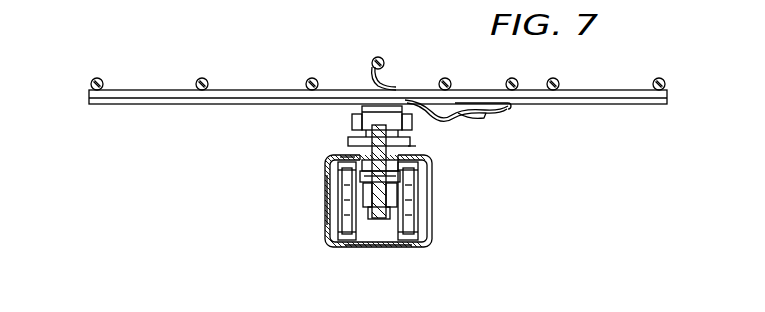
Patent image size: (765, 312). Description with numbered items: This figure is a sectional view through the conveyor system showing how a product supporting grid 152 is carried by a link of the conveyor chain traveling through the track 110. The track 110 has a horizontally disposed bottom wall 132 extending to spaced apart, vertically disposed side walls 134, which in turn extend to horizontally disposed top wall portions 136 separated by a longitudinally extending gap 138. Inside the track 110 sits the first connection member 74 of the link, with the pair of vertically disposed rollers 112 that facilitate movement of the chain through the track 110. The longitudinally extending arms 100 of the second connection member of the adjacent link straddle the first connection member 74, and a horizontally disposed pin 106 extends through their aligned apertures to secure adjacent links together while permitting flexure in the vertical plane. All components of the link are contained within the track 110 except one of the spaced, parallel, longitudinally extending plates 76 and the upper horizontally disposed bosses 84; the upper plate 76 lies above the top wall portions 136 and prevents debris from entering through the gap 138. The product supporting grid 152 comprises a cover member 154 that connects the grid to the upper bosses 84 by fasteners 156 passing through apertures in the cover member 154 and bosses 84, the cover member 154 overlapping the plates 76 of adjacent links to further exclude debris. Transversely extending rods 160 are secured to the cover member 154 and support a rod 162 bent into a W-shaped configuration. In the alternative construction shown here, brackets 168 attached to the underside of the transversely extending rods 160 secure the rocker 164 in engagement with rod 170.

The first connection member 74 is at (381, 220).
The longitudinally extending plates 76 is at (408, 145).
The upper horizontally disposed bosses 84 is at (372, 118).
The longitudinally extending arms 100 is at (365, 193).
The horizontally disposed pin 106 is at (396, 174).
The track 110 is at (325, 247).
The vertically disposed rollers 112 is at (348, 222).
The bottom wall 132 is at (402, 248).
The side walls 134 is at (327, 170).
The top wall portions 136 is at (357, 159).
The gap 138 is at (352, 134).
The product supporting grid 152 is at (145, 150).
The cover member 154 is at (412, 120).
The fasteners 156 is at (350, 124).
The transversely extending rods 160 is at (122, 98).
The rod 162 is at (196, 81).
The rocker 164 is at (379, 57).
The brackets 168 is at (482, 117).
The rod 170 is at (449, 109).